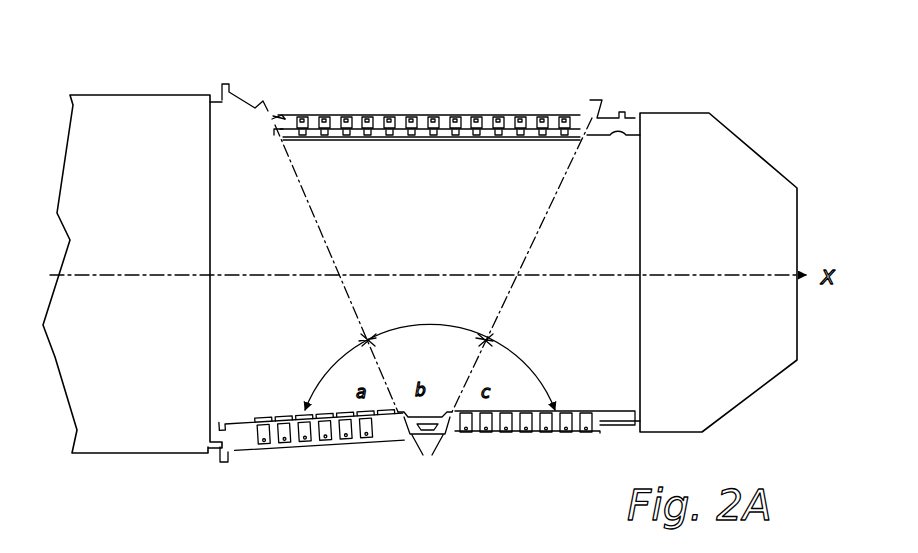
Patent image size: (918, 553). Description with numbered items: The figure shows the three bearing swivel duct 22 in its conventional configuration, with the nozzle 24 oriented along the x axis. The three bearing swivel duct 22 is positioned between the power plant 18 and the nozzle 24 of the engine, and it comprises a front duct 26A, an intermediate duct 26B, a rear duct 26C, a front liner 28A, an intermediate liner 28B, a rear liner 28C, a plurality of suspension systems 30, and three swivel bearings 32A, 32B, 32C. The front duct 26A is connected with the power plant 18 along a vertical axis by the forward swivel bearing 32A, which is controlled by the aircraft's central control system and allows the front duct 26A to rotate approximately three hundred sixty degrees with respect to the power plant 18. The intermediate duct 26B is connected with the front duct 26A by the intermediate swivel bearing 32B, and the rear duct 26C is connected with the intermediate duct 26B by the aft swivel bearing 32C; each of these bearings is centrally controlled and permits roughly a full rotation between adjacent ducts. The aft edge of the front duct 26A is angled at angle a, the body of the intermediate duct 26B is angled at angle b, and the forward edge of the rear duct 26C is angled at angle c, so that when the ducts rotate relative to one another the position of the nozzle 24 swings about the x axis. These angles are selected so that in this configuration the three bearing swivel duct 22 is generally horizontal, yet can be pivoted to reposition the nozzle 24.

The power plant 18 is at (144, 226).
The three bearing swivel duct 22 is at (163, 82).
The nozzle 24 is at (714, 226).
The front duct 26A is at (399, 443).
The intermediate duct 26B is at (290, 112).
The rear duct 26C is at (537, 433).
The front liner 28A is at (290, 410).
The intermediate liner 28B is at (432, 141).
The rear liner 28C is at (550, 408).
The suspension systems 30 is at (512, 112).
The forward swivel bearing 32A is at (237, 77).
The intermediate swivel bearing 32B is at (418, 452).
The aft swivel bearing 32C is at (615, 82).